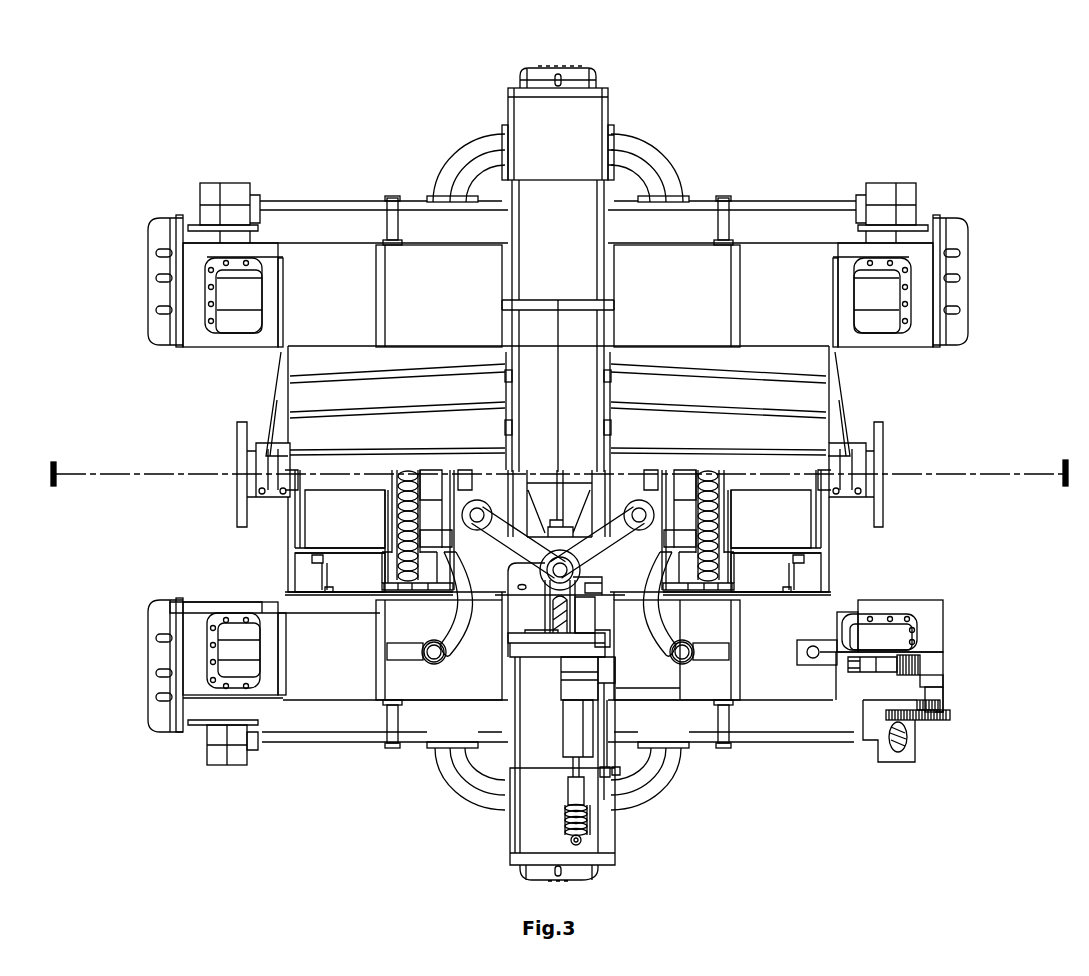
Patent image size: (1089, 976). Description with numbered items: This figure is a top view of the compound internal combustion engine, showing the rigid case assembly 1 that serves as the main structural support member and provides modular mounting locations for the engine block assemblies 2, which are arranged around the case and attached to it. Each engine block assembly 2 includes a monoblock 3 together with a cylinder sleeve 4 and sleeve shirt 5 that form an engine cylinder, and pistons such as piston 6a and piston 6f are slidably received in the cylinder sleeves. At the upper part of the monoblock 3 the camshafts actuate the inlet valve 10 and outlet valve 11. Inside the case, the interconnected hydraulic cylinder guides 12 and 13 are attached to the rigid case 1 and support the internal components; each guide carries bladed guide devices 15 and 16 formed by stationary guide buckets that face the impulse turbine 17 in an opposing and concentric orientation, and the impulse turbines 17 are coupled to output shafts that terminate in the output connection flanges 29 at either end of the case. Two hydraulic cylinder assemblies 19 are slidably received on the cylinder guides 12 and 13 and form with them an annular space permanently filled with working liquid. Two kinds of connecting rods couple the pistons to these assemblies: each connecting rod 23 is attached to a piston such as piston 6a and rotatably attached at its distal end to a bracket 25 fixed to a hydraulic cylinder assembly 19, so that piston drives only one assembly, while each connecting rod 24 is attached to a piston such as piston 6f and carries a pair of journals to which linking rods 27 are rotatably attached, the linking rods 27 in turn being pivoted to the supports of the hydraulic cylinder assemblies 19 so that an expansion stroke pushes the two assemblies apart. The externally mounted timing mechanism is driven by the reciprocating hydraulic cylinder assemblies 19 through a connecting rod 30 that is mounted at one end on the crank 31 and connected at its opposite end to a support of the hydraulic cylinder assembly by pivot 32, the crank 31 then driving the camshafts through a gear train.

The rigid case assembly 1 is at (300, 393).
The engine block assembly 2 is at (190, 280).
The monoblock 3 is at (608, 775).
The cylinder sleeve 4 is at (588, 598).
The sleeve shirt 5 is at (628, 605).
The piston 6a is at (813, 665).
The piston 6f is at (620, 600).
The inlet valve 10 is at (921, 720).
The outlet valve 11 is at (613, 812).
The hydraulic cylinder guide 12 is at (448, 548).
The hydraulic cylinder guide 13 is at (337, 548).
The bladed guide device 15 is at (731, 556).
The bladed guide device 16 is at (691, 556).
The impulse turbine 17 is at (392, 560).
The hydraulic cylinder assembly 19 is at (345, 592).
The connecting rod 23 is at (407, 652).
The connecting rod 24 is at (565, 617).
The bracket 25 is at (493, 563).
The linking rod 27 is at (520, 660).
The output connection flange 29 is at (883, 440).
The connecting rod 30 is at (598, 470).
The crank 31 is at (670, 632).
The pivot 32 is at (646, 545).